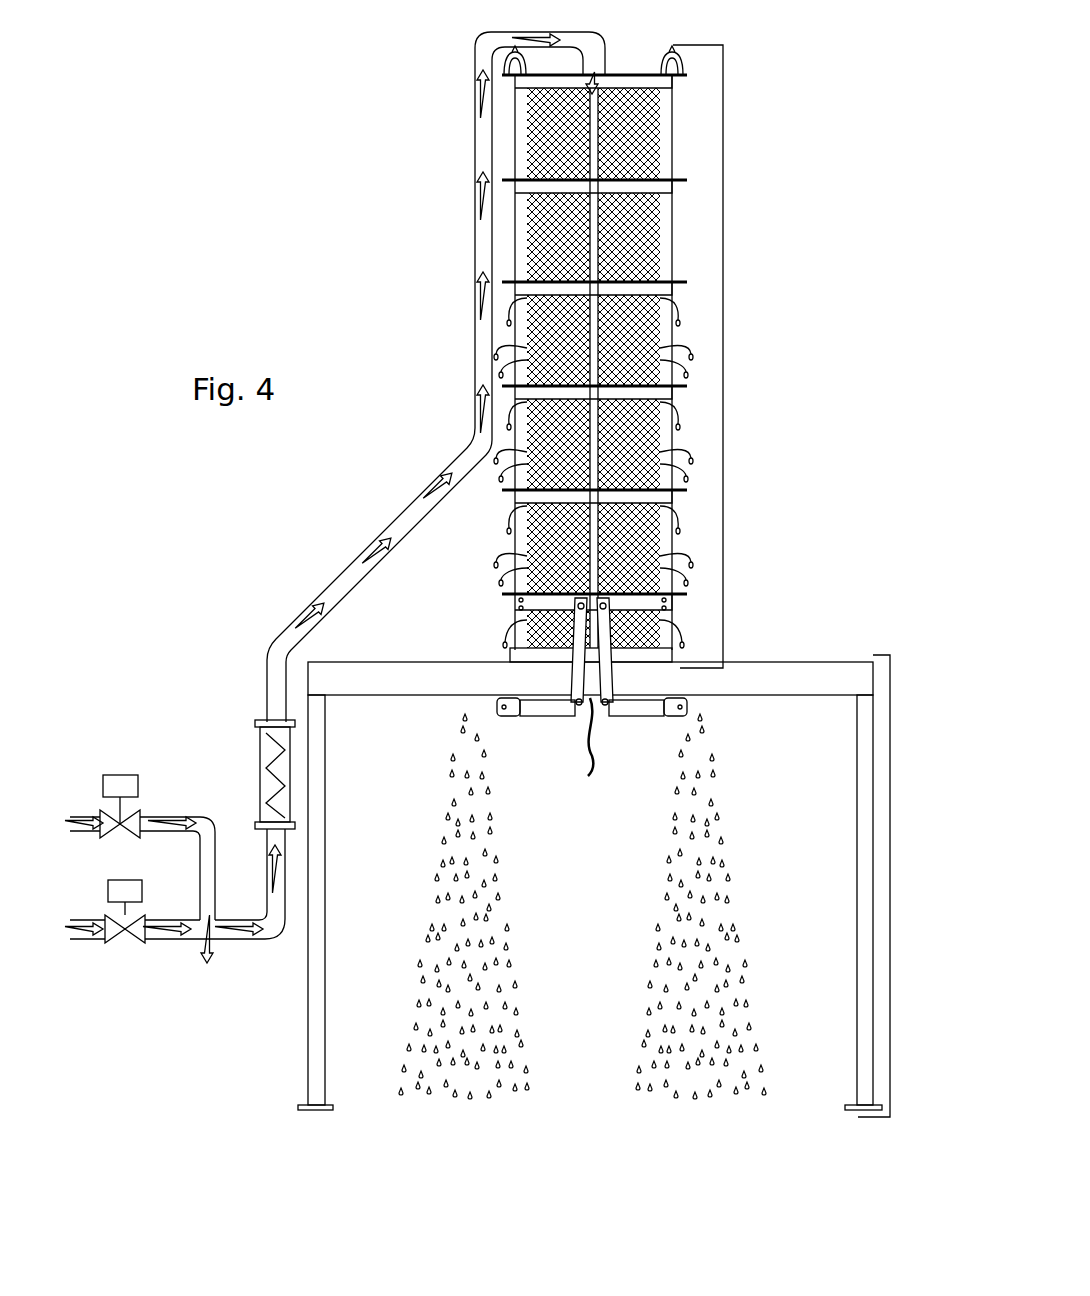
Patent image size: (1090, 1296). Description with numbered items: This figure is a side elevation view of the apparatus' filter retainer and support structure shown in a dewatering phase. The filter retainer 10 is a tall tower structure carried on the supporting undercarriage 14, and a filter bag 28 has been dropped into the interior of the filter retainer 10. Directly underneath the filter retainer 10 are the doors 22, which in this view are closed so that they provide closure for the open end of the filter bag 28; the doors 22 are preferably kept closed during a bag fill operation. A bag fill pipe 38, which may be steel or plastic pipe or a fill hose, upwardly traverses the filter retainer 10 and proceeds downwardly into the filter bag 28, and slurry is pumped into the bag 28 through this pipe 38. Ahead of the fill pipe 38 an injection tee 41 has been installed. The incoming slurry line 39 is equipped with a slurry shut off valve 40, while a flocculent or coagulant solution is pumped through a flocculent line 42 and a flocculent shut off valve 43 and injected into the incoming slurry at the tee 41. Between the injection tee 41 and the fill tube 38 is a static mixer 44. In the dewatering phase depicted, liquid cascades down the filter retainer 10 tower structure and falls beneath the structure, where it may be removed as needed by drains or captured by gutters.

The filter retainer 10 is at (723, 357).
The supporting undercarriage 14 is at (890, 882).
The doors 22 is at (633, 710).
The filter bag 28 is at (662, 237).
The bag fill pipe 38 is at (462, 460).
The incoming slurry line 39 is at (97, 930).
The slurry shut off valve 40 is at (135, 918).
The injection tee 41 is at (207, 933).
The flocculent line 42 is at (85, 820).
The flocculent shut off valve 43 is at (137, 817).
The static mixer 44 is at (265, 743).